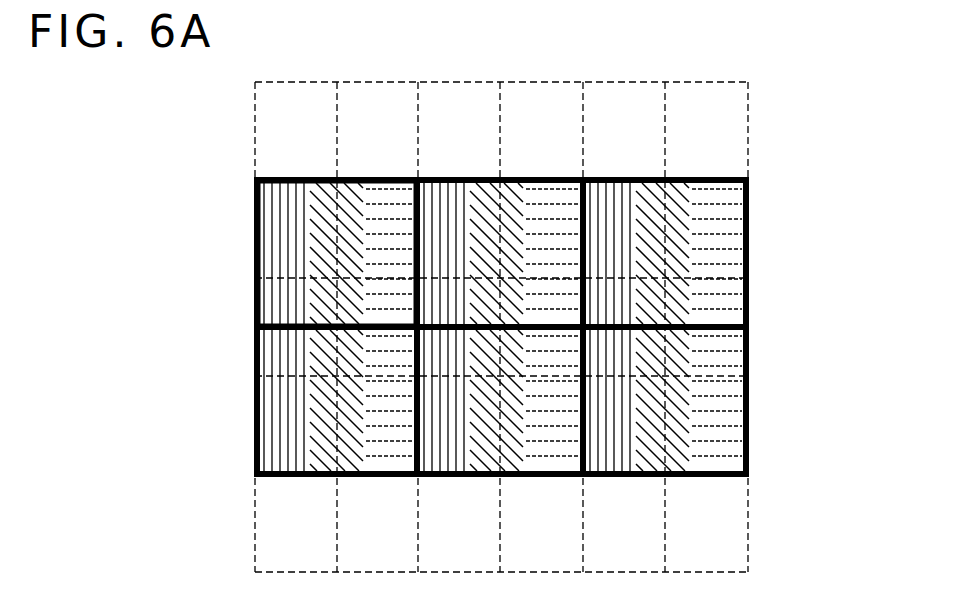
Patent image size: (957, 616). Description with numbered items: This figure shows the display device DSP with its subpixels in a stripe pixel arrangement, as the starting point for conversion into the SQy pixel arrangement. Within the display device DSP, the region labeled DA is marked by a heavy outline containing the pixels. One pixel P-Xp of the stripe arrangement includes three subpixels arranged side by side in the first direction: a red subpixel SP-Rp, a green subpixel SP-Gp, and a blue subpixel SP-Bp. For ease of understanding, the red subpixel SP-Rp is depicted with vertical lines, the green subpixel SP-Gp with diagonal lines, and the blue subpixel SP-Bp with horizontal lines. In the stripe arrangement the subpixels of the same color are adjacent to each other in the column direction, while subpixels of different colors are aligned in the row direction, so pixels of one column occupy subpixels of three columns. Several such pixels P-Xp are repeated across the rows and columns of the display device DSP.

The pixel of stripe pixel arrangement P-Xp is at (295, 178).
The red subpixel SP-Rp is at (266, 199).
The green subpixel SP-Gp is at (332, 250).
The blue subpixel SP-Bp is at (392, 302).
The display device DSP is at (801, 137).
The display area DA is at (801, 202).